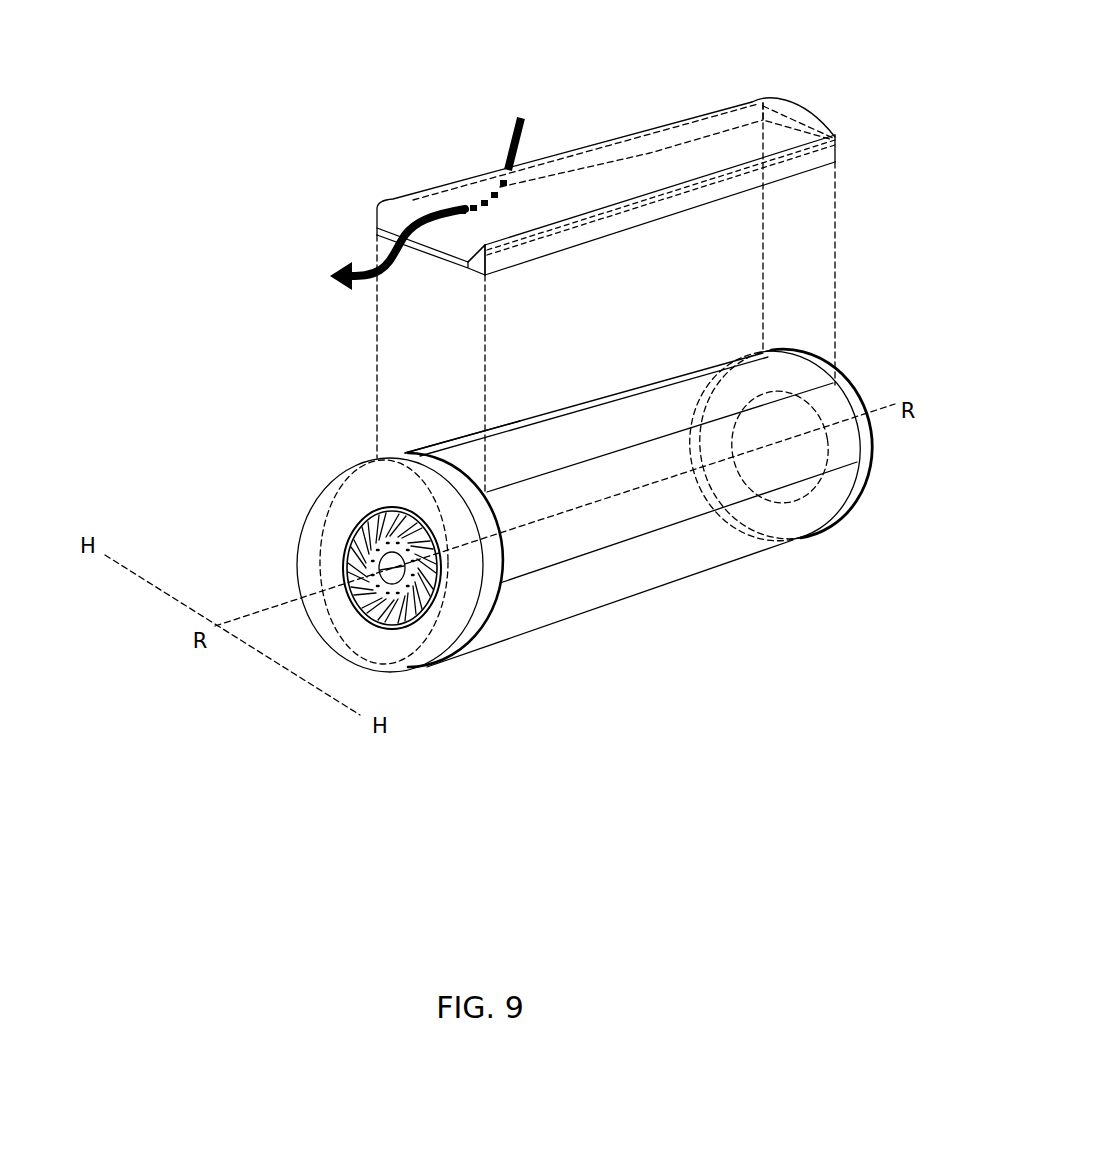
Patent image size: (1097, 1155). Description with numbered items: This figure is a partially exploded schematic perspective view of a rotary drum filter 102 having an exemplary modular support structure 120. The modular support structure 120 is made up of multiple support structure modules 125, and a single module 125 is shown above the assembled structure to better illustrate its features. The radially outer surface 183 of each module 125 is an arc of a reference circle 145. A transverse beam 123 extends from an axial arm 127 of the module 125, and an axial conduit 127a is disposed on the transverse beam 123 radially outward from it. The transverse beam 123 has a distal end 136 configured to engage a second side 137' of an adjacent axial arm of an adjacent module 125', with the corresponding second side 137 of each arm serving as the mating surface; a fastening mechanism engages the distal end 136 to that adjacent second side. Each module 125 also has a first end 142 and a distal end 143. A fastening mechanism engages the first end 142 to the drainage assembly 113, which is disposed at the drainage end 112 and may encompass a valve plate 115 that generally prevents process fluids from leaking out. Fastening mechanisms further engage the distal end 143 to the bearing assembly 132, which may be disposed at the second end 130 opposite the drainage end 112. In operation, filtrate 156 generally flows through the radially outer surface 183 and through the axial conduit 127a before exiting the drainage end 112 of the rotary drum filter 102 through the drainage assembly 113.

The rotary drum filter 102 is at (250, 402).
The drainage end 112 is at (337, 436).
The drainage assembly 113 is at (437, 625).
The valve plate 115 is at (392, 506).
The modular support structure 120 is at (486, 663).
The transverse beam 123 is at (410, 248).
The support structure module 125 is at (592, 271).
The adjacent module 125' is at (544, 392).
The axial arm 127 is at (548, 266).
The axial conduit 127a is at (452, 236).
The second end 130 is at (873, 379).
The bearing assembly 132 is at (858, 470).
The distal end 136 is at (377, 227).
The second side 137 is at (660, 205).
The second side of adjacent axial arm 137' is at (594, 406).
The first end 142 is at (465, 292).
The distal end 143 is at (856, 133).
The reference circle 145 is at (322, 523).
The filtrate 156 is at (514, 117).
The radially outer surface 183 is at (797, 102).